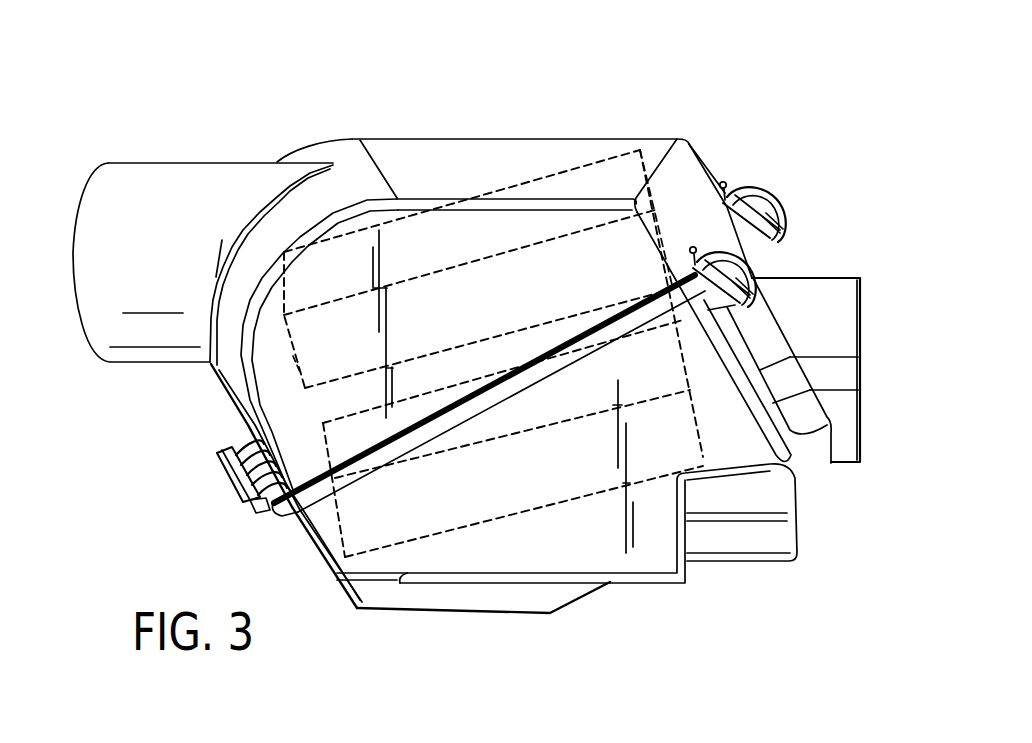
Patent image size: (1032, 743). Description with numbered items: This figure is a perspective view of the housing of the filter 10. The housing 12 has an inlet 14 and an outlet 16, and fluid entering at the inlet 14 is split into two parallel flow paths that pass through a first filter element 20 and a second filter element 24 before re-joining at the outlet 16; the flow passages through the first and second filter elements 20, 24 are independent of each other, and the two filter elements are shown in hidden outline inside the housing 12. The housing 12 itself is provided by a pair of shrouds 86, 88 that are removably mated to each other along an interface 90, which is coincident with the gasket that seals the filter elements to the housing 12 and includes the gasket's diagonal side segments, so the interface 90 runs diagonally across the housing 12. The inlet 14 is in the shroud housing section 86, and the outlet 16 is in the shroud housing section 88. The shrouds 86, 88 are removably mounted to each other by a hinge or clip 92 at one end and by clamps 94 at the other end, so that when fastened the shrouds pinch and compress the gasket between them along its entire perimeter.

The filter 10 is at (510, 116).
The housing 12 is at (459, 138).
The inlet 14 is at (862, 313).
The outlet 16 is at (73, 263).
The first filter element 20 is at (320, 540).
The second filter element 24 is at (292, 358).
The shroud 86 is at (622, 585).
The shroud 88 is at (658, 147).
The interface 90 is at (488, 398).
The clip 92 is at (228, 461).
The clamp 94 is at (758, 257).